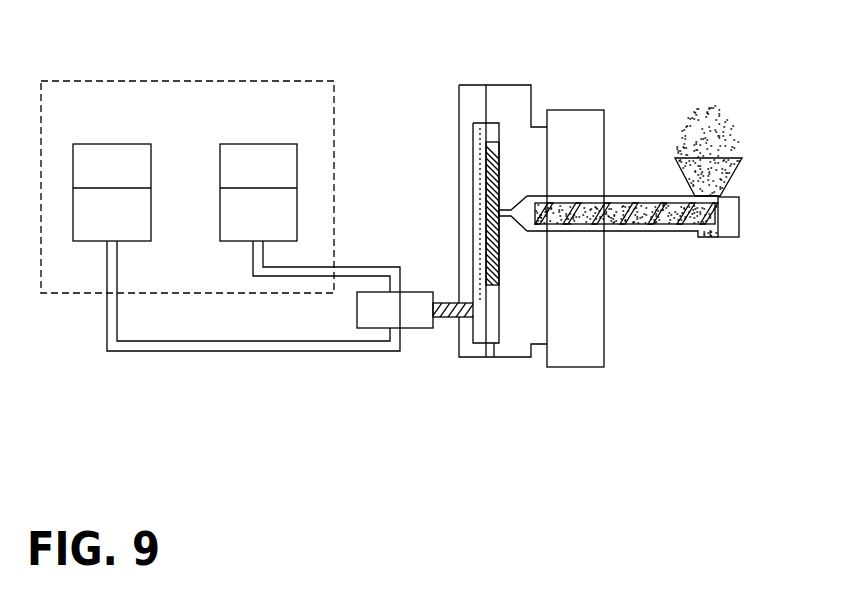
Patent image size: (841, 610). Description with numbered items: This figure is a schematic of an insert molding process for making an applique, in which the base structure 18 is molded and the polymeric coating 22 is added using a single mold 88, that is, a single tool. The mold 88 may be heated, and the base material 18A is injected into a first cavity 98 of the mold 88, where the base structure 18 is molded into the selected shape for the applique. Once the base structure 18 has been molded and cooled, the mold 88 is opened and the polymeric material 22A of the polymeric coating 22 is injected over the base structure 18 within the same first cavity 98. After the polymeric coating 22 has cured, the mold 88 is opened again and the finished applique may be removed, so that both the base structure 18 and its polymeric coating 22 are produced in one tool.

The base structure 18 is at (499, 153).
The base material 18A is at (737, 152).
The mold 88 is at (523, 280).
The first cavity 98 is at (499, 295).
The polymeric coating 22 is at (480, 330).
The polymeric material 22A is at (442, 328).